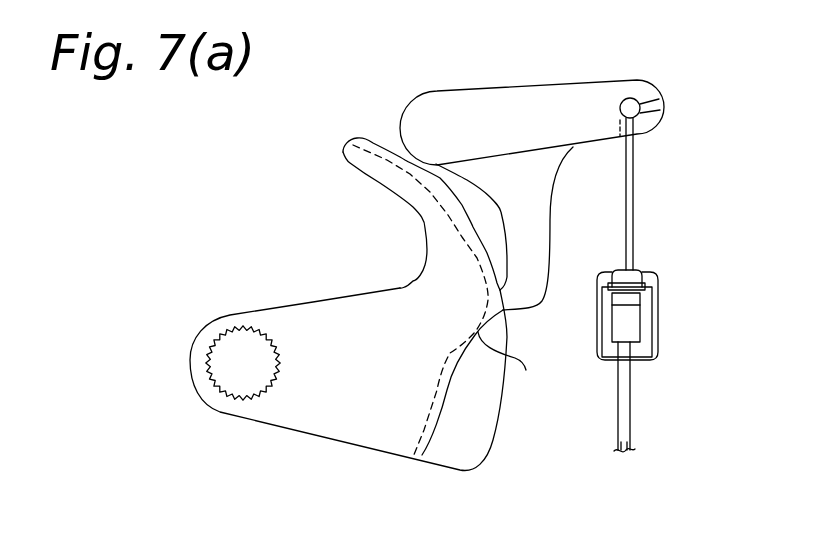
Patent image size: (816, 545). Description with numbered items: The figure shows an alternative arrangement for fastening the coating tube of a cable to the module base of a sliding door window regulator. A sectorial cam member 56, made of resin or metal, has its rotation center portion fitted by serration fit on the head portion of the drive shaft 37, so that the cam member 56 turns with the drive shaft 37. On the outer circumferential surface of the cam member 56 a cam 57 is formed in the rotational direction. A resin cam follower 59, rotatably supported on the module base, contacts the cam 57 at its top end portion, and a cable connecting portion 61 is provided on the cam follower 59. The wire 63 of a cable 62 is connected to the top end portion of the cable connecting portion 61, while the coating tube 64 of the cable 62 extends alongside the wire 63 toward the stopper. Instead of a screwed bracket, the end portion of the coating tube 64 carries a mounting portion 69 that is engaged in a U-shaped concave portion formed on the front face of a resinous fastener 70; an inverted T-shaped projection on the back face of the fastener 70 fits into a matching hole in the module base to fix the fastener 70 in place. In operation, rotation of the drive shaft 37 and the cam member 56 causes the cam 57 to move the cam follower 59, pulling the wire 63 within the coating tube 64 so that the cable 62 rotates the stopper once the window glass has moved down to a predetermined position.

The drive shaft 37 is at (245, 384).
The cam member 56 is at (362, 430).
The cam 57 is at (526, 370).
The cam follower 59 is at (537, 266).
The cable connecting portion 61 is at (562, 106).
The cable 62 is at (627, 440).
The wire 63 is at (635, 203).
The coating tube 64 is at (630, 387).
The mounting portion 69 is at (630, 328).
The fastener 70 is at (658, 287).